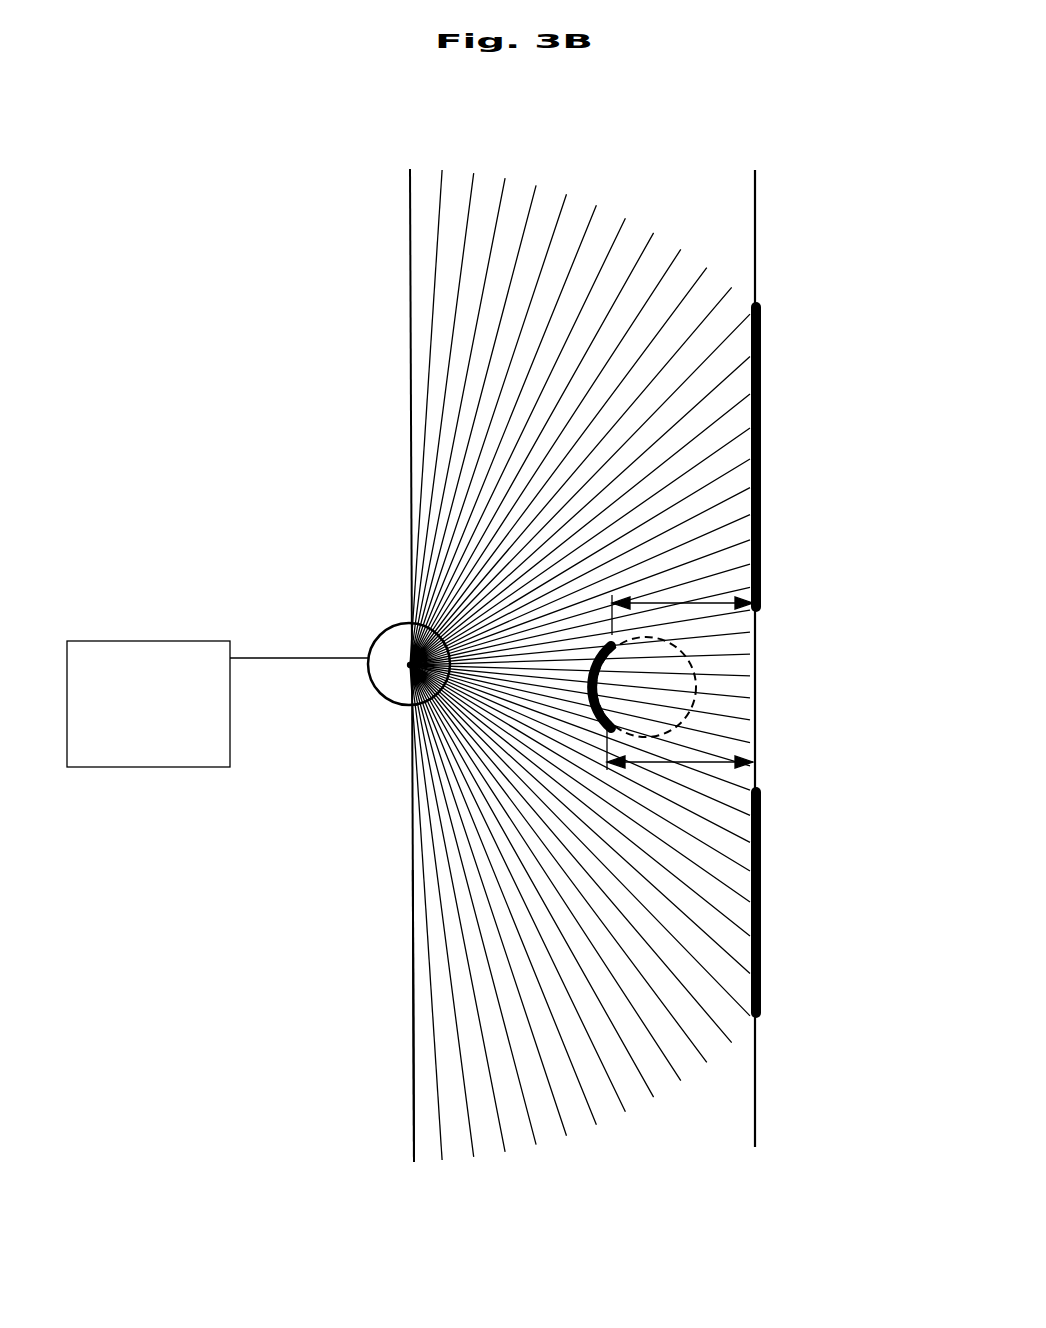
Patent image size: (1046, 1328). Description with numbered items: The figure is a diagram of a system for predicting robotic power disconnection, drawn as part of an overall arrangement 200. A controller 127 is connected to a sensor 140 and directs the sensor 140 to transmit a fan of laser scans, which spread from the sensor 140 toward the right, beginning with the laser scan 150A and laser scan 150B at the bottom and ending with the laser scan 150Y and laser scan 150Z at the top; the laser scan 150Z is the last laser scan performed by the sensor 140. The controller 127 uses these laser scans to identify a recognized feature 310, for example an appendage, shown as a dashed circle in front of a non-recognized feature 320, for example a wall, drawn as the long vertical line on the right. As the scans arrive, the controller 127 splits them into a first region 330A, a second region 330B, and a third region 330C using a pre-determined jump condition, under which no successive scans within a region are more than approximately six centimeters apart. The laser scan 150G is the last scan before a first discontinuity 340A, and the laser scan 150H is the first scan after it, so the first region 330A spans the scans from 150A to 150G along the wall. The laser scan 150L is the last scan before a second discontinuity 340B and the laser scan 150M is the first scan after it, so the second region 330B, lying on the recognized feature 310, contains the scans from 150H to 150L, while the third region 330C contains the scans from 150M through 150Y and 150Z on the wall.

The controller 127 is at (217, 762).
The sensor 140 is at (370, 640).
The laser scan 150Z is at (410, 203).
The laser scan 150A is at (415, 1148).
The laser scan 150Y is at (442, 200).
The laser scan 150B is at (445, 1138).
The laser scan 150M is at (718, 618).
The laser scan 150L is at (645, 656).
The laser scan 150H is at (650, 705).
The laser scan 150G is at (665, 757).
The scanning system 200 is at (800, 1023).
The recognized feature 310 is at (696, 687).
The non-recognized feature 320 is at (757, 213).
The first region 330A is at (757, 930).
The second region 330B is at (612, 646).
The third region 330C is at (762, 360).
The first discontinuity 340A is at (712, 762).
The second discontinuity 340B is at (662, 603).